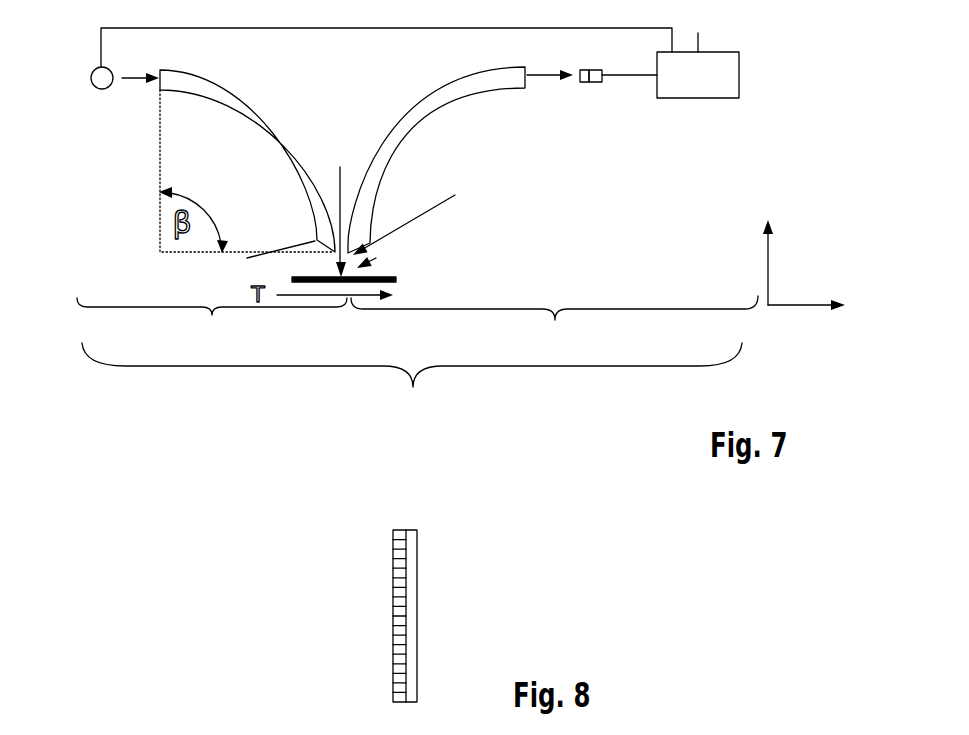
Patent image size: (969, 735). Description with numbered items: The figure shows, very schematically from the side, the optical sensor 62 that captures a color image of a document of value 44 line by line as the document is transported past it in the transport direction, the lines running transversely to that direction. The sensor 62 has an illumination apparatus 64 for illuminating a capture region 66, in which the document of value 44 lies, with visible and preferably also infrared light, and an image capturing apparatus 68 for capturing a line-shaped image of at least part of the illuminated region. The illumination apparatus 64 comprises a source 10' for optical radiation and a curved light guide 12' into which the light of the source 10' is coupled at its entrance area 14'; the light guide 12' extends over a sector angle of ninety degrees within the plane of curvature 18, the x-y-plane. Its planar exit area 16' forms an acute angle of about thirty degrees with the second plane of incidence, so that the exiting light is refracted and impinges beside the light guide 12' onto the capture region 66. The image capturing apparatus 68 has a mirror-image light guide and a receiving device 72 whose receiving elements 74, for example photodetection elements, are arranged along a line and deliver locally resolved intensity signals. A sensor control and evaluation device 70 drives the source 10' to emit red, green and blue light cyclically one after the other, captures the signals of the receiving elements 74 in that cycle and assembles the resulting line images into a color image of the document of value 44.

In FIG. 7, the source 10' is at (115, 104).
In FIG. 7, the light guide 12' is at (247, 156).
In FIG. 7, the entrance area 14' is at (451, 221).
In FIG. 7, the capture region 66 is at (376, 258).
In FIG. 7, the document of value 44 is at (400, 274).
In FIG. 7, the exit area 16' is at (236, 264).
In FIG. 7, the illumination apparatus 64 is at (212, 327).
In FIG. 7, the image capturing apparatus 68 is at (554, 328).
In FIG. 7, the sensor 62 is at (412, 387).
In FIG. 7, the sensor control and evaluation device 70 is at (739, 78).
In FIG. 7, the receiving device 72 is at (612, 94).
In FIG. 8, the receiving device 72 is at (412, 607).
In FIG. 7, the receiving elements 74 is at (580, 83).
In FIG. 8, the receiving elements 74 is at (395, 633).
In FIG. 7, the plane of curvature 18 is at (817, 226).